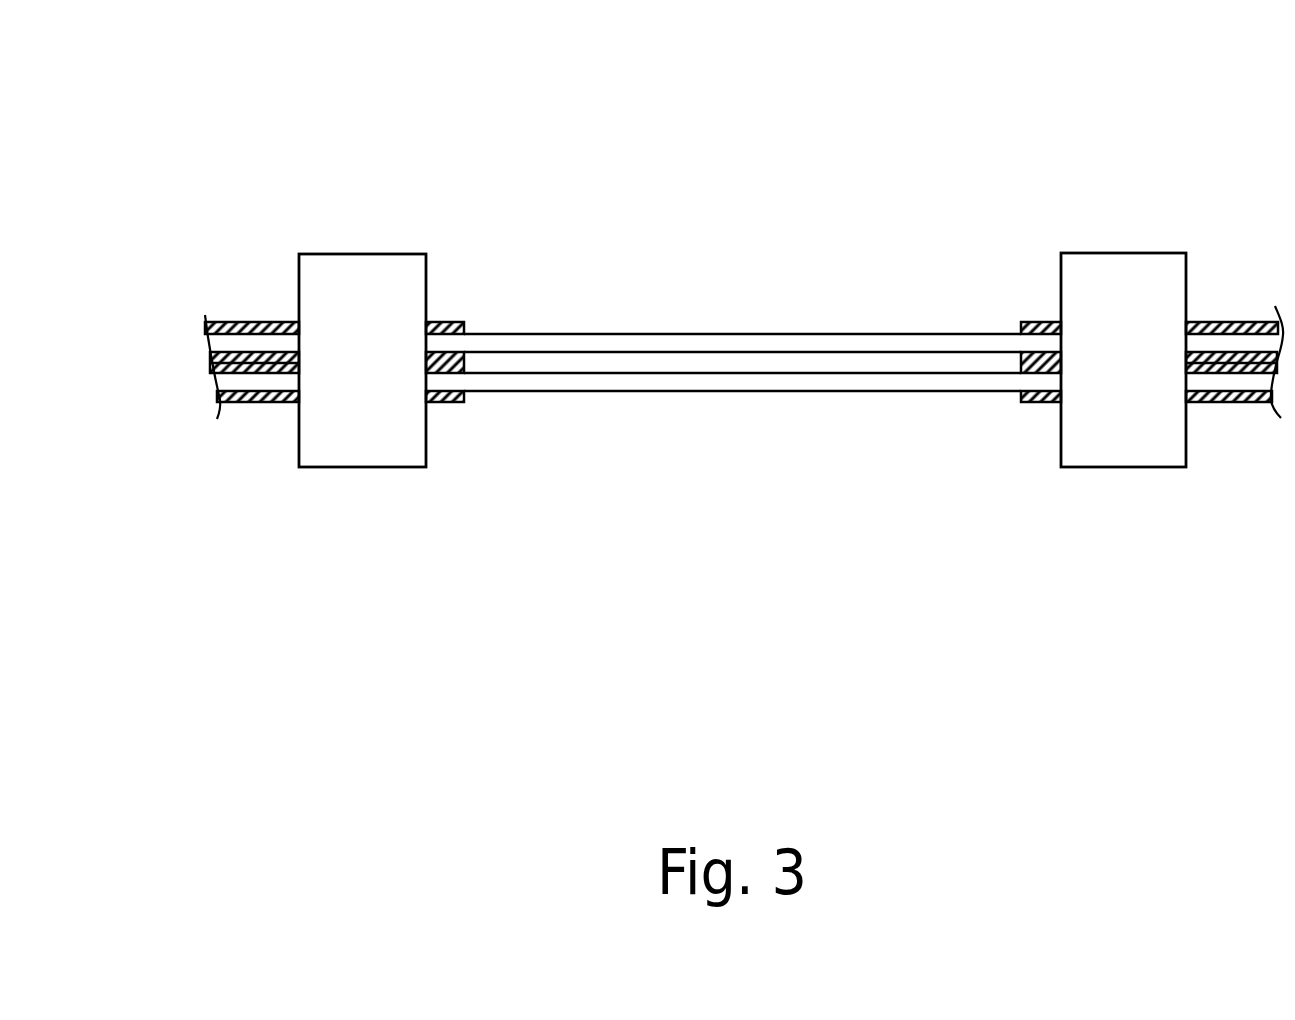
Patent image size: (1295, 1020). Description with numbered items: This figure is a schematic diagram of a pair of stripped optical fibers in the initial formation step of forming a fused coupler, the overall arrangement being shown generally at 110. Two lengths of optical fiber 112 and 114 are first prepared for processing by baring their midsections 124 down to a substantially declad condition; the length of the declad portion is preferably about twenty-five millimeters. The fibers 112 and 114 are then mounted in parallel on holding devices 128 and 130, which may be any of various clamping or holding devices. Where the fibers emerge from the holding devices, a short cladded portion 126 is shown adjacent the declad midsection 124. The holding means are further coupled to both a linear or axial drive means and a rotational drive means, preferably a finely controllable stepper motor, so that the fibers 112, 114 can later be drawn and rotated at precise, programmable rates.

The fluid heat exchange assembly 110 is at (660, 202).
The optical fiber 112 is at (204, 346).
The optical fiber 114 is at (216, 380).
The bared midsections 124 is at (737, 310).
The connector / hatched fitting 126 is at (442, 321).
The holding device 128 is at (383, 312).
The holding device 130 is at (1137, 321).